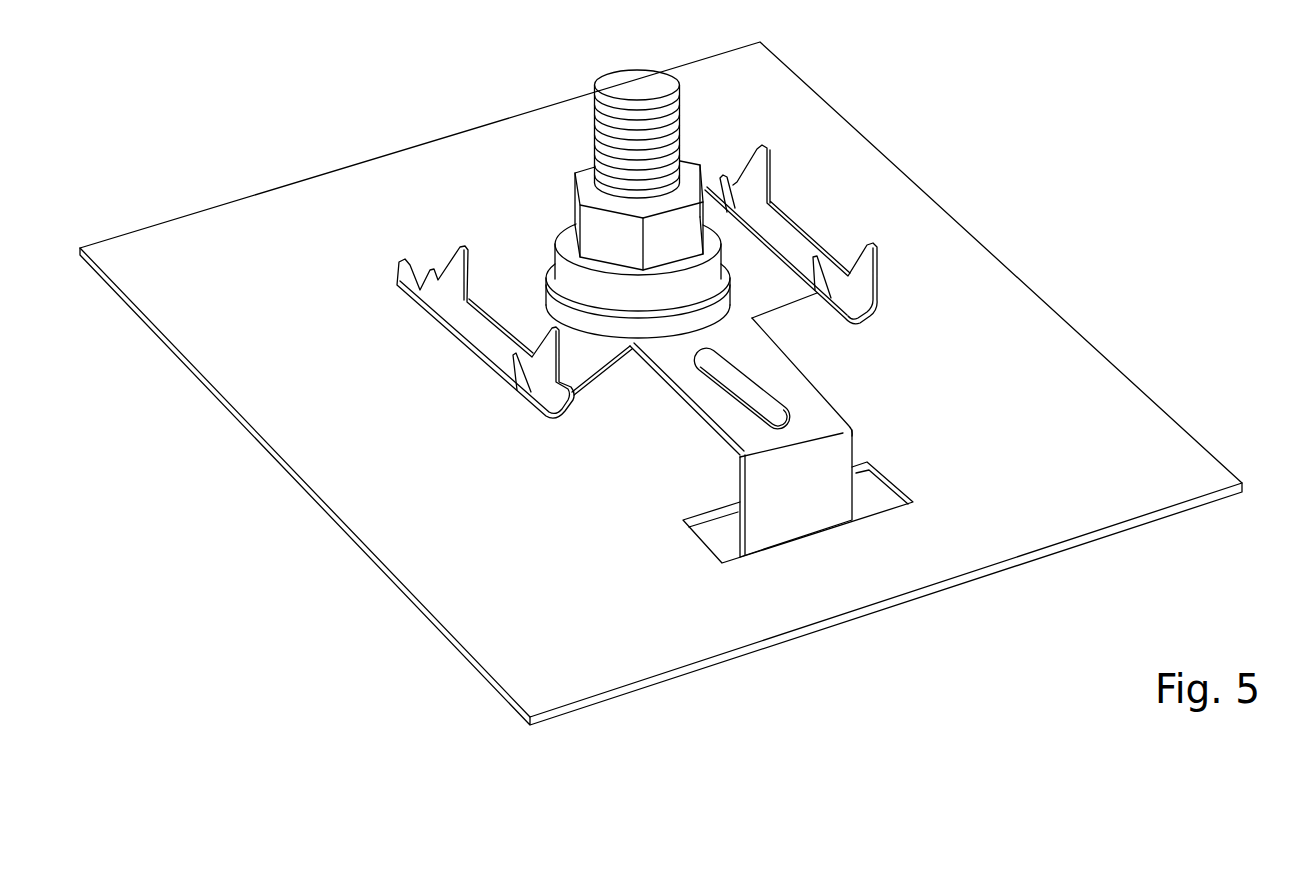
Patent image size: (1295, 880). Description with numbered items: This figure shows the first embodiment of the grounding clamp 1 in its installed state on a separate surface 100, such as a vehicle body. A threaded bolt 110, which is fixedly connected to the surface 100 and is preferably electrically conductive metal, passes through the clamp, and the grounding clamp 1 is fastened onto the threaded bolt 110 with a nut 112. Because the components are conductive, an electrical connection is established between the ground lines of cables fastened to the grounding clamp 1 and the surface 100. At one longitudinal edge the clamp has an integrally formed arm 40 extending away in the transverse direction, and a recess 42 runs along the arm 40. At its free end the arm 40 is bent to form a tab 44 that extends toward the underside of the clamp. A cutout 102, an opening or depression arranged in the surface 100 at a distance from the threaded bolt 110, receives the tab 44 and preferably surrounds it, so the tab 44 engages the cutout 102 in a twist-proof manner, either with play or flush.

The grounding clamp 1 is at (660, 342).
The arm 40 is at (759, 390).
The recess 42 is at (740, 395).
The tab 44 is at (812, 500).
The surface 100 is at (1003, 303).
The cutout 102 is at (873, 493).
The threaded bolt 110 is at (690, 108).
The nut 112 is at (597, 232).